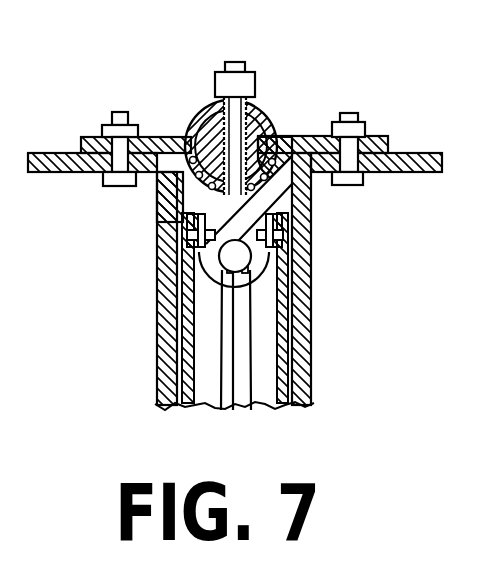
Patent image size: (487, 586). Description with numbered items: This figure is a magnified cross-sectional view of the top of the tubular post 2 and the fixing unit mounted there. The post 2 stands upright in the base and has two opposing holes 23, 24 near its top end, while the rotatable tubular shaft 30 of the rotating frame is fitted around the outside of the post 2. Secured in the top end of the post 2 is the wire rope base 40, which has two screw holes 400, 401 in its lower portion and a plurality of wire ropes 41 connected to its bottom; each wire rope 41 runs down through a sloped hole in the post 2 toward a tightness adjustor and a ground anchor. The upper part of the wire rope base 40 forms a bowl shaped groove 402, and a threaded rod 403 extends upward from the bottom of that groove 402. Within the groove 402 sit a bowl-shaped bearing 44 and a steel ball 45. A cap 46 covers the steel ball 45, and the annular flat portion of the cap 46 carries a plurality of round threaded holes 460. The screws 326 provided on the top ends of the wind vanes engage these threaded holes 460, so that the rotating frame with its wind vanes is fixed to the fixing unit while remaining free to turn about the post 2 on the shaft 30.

The tubular post 2 is at (300, 375).
The hole 23 is at (300, 262).
The hole 24 is at (183, 270).
The rotatable tubular shaft 30 is at (305, 352).
The wire rope base 40 is at (160, 228).
The wire rope 41 is at (222, 373).
The bowl-shaped bearing 44 is at (183, 196).
The steel ball 45 is at (268, 125).
The cap 46 is at (260, 110).
The screw 326 is at (112, 183).
The screw hole 400 is at (300, 280).
The screw hole 401 is at (160, 308).
The bowl shaped groove 402 is at (292, 203).
The threaded rod 403 is at (236, 58).
The round threaded hole 460 is at (375, 135).